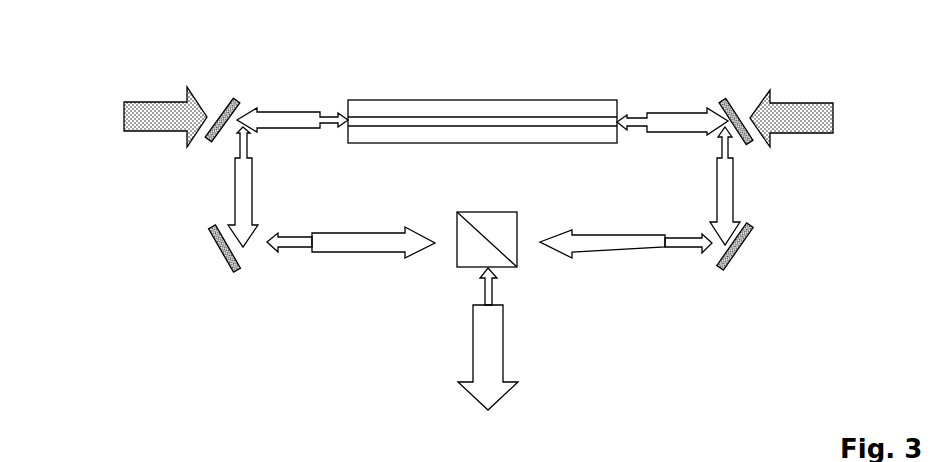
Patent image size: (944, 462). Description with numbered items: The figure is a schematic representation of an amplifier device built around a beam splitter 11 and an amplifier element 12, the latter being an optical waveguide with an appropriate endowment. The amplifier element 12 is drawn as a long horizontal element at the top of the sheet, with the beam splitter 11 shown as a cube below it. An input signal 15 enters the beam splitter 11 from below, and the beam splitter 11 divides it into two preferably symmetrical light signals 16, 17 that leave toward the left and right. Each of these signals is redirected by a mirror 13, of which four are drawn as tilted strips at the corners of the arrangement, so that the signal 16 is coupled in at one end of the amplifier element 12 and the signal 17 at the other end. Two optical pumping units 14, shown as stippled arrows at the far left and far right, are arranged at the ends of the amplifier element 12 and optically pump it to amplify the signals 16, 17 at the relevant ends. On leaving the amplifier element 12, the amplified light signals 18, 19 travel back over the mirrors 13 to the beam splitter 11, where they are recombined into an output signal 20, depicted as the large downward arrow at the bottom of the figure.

The beam splitter 11 is at (486, 202).
The amplifier element 12 is at (486, 105).
The mirror 13 is at (228, 110).
The optical pumping unit 14 is at (130, 117).
The input signal 15 is at (506, 290).
The light signal 16 is at (293, 226).
The light signal 17 is at (682, 225).
The amplified light signal 18 is at (367, 223).
The amplified light signal 19 is at (616, 221).
The output signal 20 is at (513, 362).